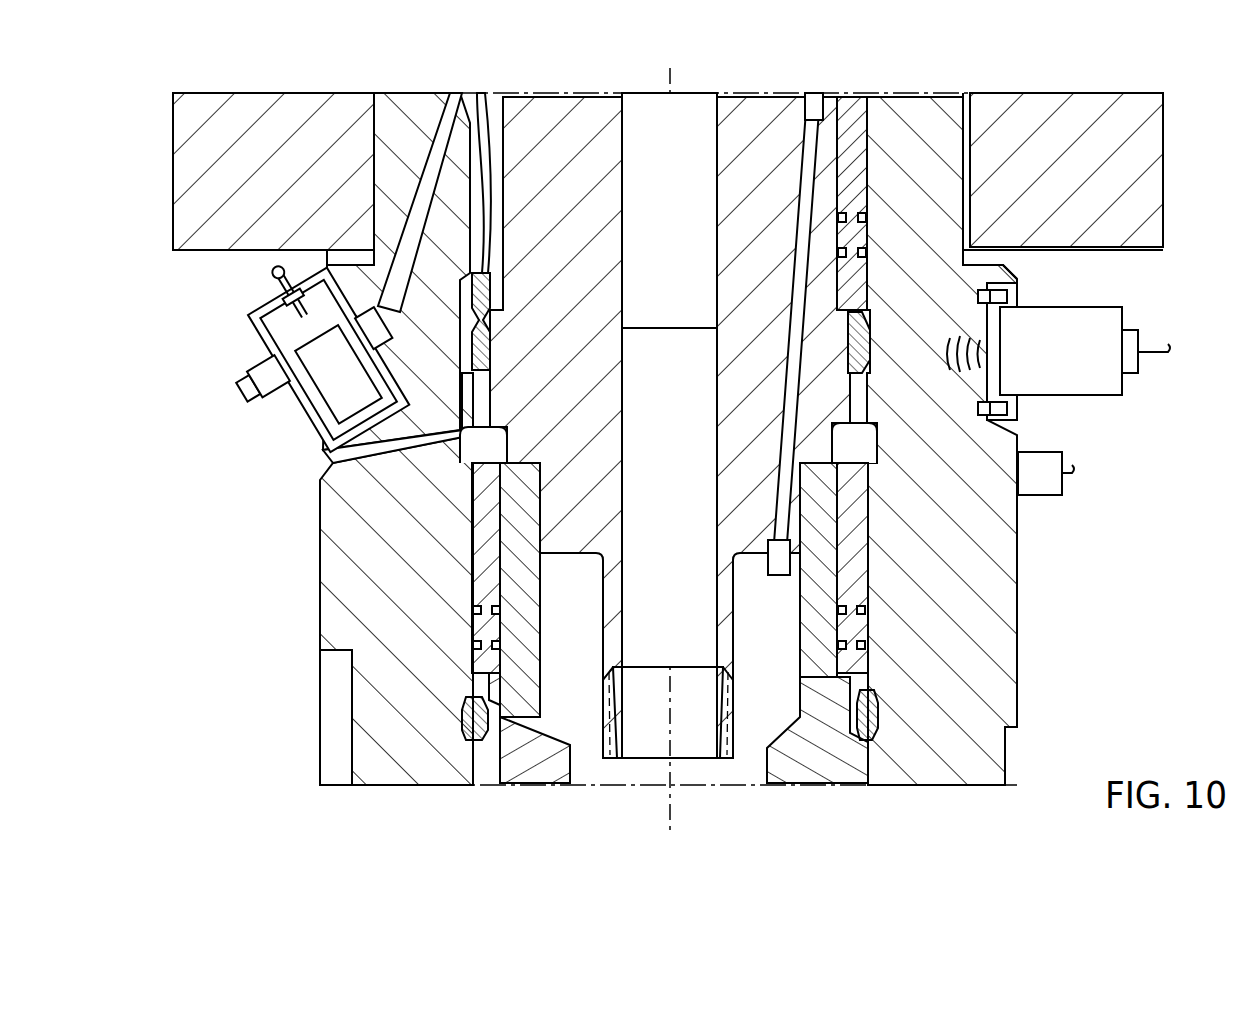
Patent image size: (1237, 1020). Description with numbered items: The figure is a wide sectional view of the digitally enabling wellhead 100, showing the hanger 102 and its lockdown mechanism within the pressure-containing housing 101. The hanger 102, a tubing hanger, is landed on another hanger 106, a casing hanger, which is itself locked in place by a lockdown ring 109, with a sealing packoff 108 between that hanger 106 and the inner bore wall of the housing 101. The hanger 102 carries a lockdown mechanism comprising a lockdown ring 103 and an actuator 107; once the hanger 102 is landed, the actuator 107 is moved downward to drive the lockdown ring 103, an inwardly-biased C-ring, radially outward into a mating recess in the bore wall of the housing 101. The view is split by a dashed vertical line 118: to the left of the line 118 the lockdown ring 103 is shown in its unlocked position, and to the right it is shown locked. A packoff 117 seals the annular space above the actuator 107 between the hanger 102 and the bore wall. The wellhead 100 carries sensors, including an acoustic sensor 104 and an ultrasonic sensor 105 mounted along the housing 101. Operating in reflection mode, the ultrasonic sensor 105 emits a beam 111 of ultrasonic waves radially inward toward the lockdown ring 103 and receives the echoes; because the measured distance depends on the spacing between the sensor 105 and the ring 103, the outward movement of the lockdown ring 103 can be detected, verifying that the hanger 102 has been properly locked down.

The digitally enabling wellhead 100 is at (691, 438).
The pressure-containing housing 101 is at (992, 637).
The hanger 102 is at (575, 535).
The lockdown ring 103 is at (480, 332).
The acoustic sensor 104 is at (1045, 460).
The ultrasonic sensor 105 is at (1108, 312).
The casing hanger 106 is at (792, 762).
The actuator 107 is at (477, 99).
The sealing packoff 108 is at (838, 622).
The lockdown ring 109 is at (905, 760).
The beam of ultrasonic waves 111 is at (985, 355).
The packoff 117 is at (861, 96).
The dashed vertical line 118 is at (663, 770).